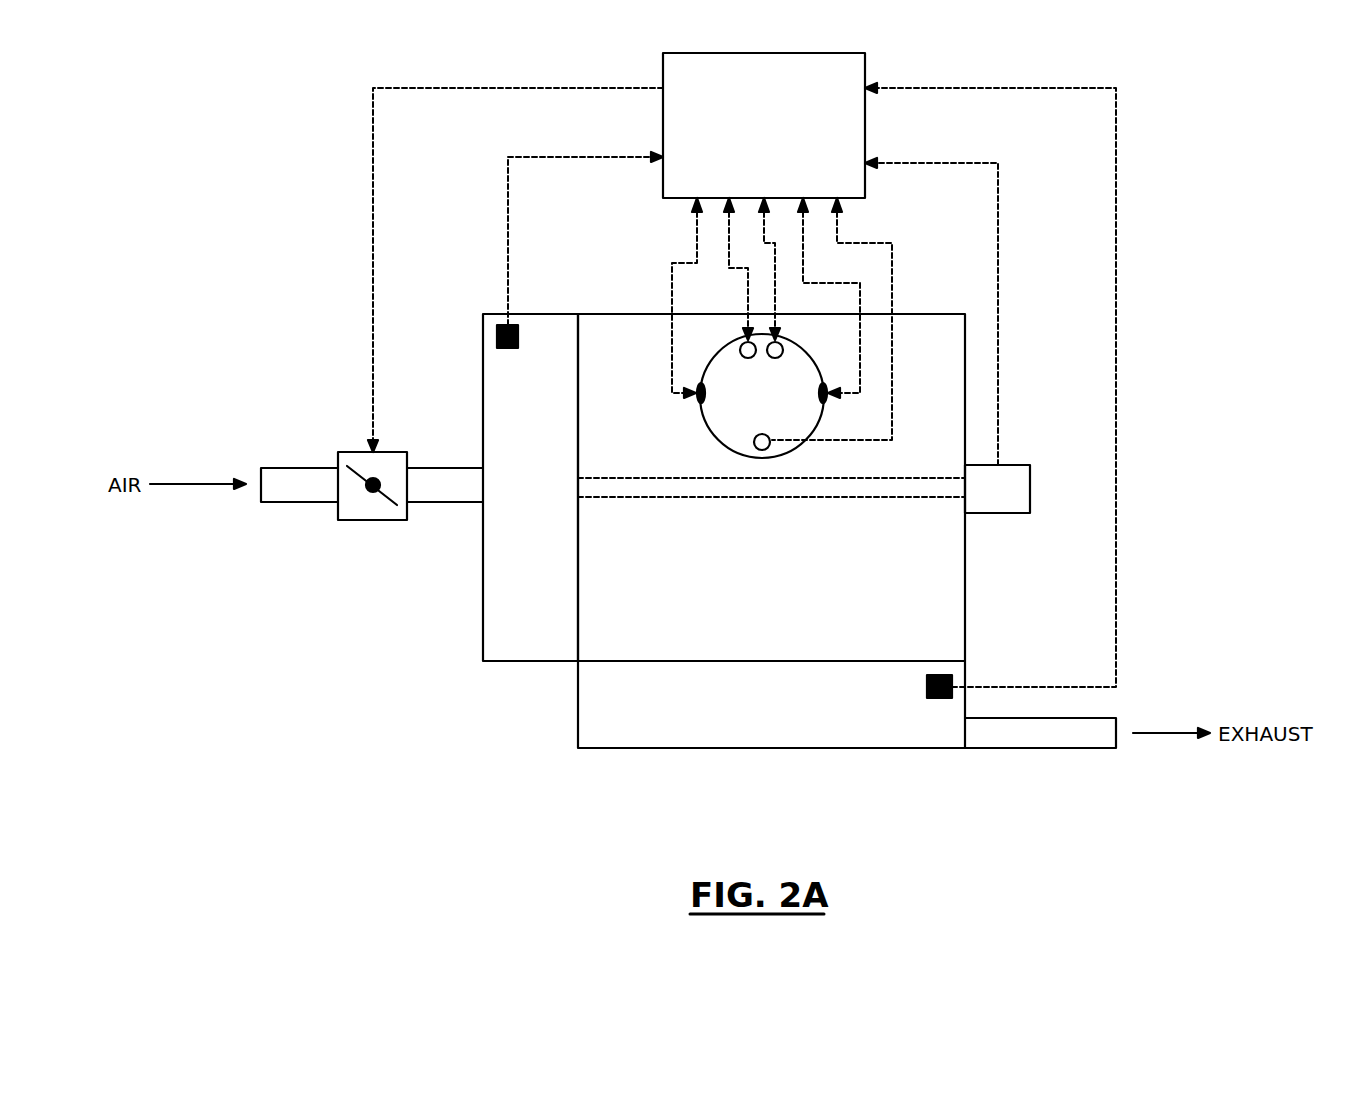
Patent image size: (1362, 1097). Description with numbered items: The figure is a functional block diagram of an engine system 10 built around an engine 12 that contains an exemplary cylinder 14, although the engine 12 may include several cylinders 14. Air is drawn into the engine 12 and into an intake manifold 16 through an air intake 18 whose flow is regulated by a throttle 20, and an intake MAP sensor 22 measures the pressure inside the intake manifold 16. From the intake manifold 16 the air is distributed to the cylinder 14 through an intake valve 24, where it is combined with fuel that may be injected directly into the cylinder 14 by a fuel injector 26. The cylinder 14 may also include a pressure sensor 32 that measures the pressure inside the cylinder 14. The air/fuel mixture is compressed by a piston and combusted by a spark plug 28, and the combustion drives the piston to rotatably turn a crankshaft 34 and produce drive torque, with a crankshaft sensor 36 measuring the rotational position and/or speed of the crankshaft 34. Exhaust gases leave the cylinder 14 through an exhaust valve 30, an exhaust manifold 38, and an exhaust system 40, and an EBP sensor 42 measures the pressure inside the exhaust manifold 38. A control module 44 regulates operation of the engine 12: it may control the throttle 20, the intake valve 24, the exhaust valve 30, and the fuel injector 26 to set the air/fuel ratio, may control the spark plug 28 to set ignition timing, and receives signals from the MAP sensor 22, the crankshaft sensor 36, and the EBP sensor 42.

The engine system 10 is at (250, 92).
The engine 12 is at (965, 594).
The cylinder 14 is at (808, 443).
The intake manifold 16 is at (523, 661).
The air intake 18 is at (300, 502).
The throttle 20 is at (372, 520).
The intake MAP sensor 22 is at (497, 334).
The intake valve 24 is at (698, 396).
The fuel injector 26 is at (742, 345).
The spark plug 28 is at (782, 345).
The exhaust valve 30 is at (826, 396).
The pressure sensor 32 is at (754, 445).
The crankshaft 34 is at (805, 498).
The crankshaft sensor 36 is at (1030, 488).
The exhaust manifold 38 is at (779, 748).
The exhaust system 40 is at (1043, 748).
The EBP sensor 42 is at (927, 687).
The control module 44 is at (764, 53).